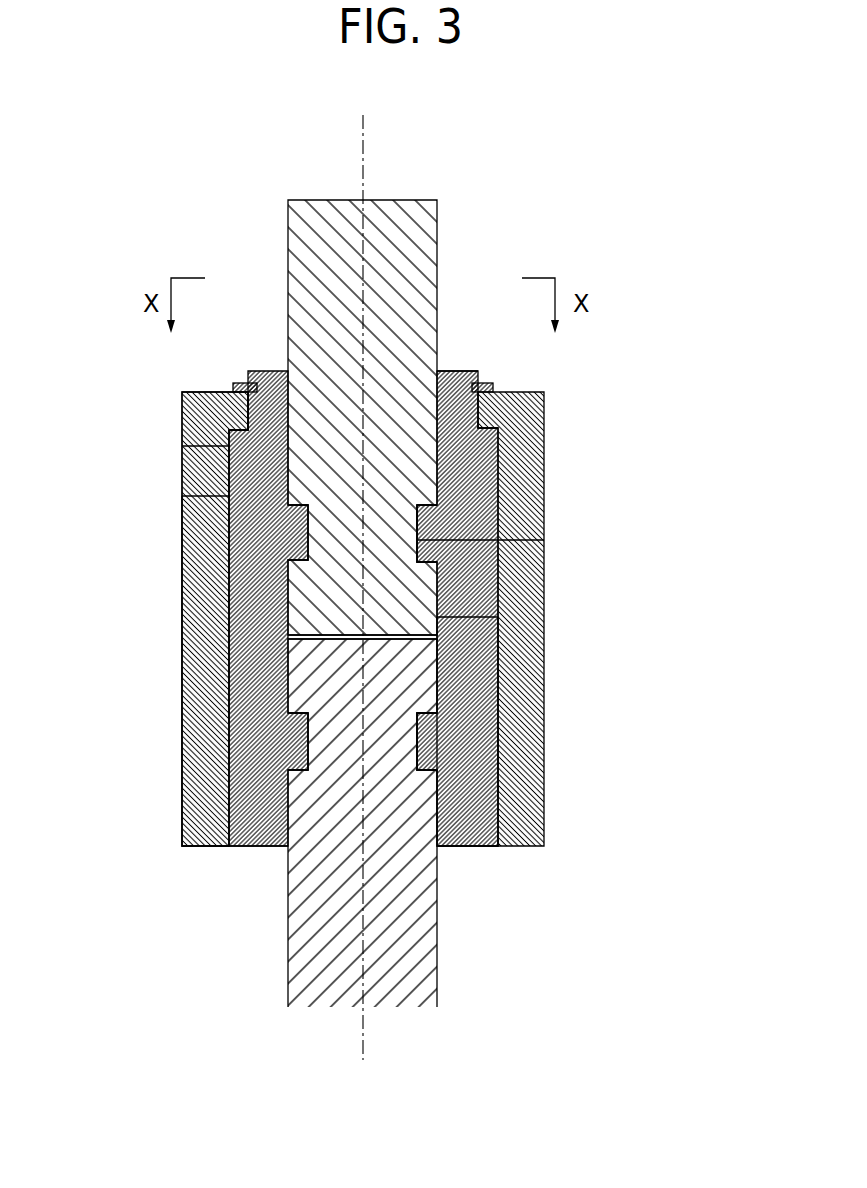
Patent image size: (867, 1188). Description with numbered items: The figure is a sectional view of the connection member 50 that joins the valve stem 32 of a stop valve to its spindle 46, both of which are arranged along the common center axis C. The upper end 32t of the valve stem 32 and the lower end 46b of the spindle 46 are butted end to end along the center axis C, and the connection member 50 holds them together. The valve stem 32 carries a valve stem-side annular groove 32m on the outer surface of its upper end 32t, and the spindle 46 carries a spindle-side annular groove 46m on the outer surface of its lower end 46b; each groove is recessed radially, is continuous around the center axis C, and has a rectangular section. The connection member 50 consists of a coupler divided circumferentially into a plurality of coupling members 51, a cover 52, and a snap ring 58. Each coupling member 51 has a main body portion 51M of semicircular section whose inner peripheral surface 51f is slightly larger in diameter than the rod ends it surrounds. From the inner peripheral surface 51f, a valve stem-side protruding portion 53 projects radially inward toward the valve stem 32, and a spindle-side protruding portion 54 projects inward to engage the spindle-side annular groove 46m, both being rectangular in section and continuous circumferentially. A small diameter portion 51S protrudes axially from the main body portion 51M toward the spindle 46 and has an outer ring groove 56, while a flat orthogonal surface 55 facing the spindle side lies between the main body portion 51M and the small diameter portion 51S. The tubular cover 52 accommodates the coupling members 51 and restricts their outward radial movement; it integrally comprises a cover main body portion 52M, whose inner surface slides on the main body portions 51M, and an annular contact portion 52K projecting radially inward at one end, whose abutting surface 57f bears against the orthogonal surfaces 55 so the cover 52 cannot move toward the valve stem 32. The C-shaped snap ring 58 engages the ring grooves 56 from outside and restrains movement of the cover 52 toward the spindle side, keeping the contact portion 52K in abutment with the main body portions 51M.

The center axis C is at (363, 160).
The valve stem 32 is at (437, 970).
The upper end of the valve stem 32t is at (288, 665).
The valve stem-side annular groove 32m is at (443, 750).
The spindle 46 is at (437, 262).
The spindle-side annular groove 46m is at (544, 540).
The lower end of the spindle 46b is at (498, 617).
The connection member 50 is at (180, 700).
The coupling member 51 is at (182, 496).
The main body portion 51M is at (500, 680).
The small diameter portion 51S is at (497, 392).
The inner peripheral surface 51f is at (296, 842).
The cover 52 is at (182, 404).
The contact portion 52K is at (248, 411).
The cover main body portion 52M is at (182, 571).
The valve stem-side protruding portion 53 is at (313, 747).
The spindle-side protruding portion 54 is at (303, 530).
The orthogonal surface 55 is at (544, 418).
The ring groove 56 is at (240, 383).
The abutting surface 57f is at (480, 407).
The snap ring 58 is at (483, 382).